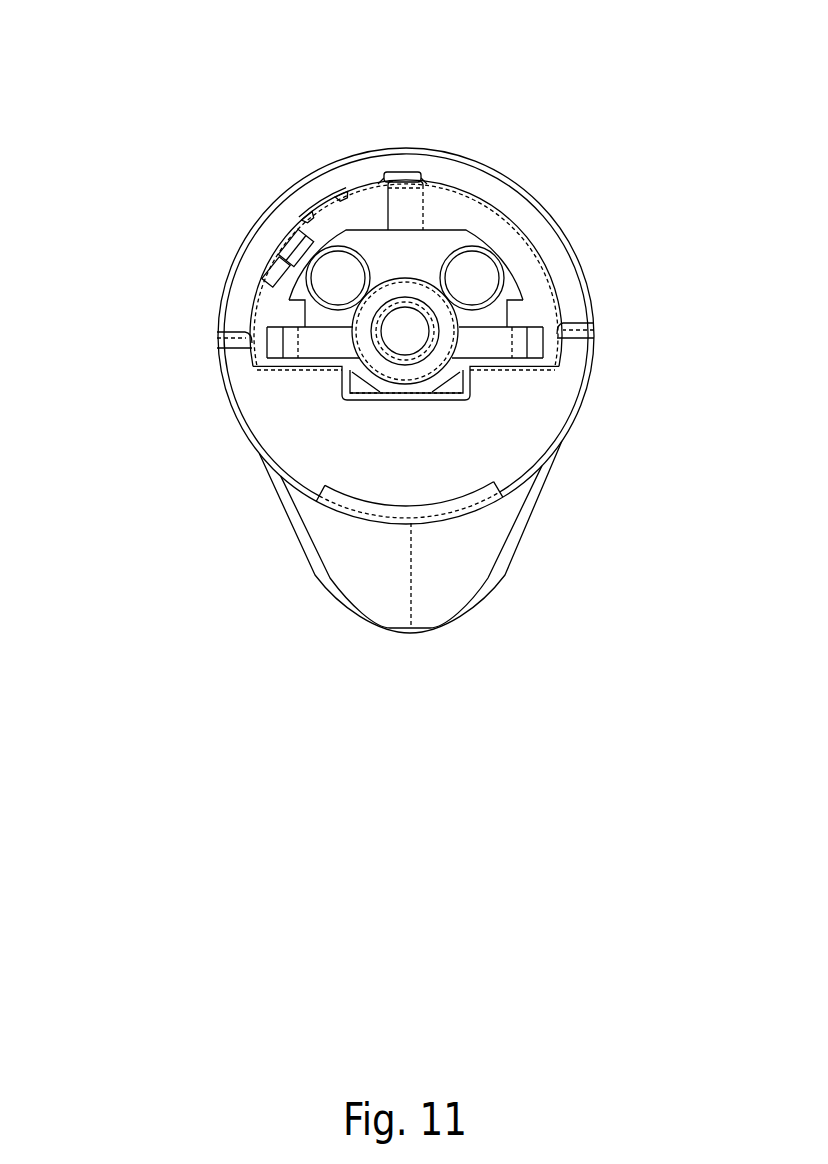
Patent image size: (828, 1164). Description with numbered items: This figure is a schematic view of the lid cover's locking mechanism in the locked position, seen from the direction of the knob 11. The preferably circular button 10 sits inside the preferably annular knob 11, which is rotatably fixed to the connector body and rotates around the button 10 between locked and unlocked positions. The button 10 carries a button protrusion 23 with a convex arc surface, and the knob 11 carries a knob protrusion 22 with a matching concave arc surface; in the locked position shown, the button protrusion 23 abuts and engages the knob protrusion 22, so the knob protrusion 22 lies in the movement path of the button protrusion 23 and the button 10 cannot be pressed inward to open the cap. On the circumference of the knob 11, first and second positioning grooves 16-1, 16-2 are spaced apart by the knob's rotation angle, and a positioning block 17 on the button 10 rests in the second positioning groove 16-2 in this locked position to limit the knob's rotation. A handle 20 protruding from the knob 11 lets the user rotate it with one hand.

The button 10 is at (532, 310).
The knob 11 is at (481, 437).
The first positioning groove 16-1 is at (336, 190).
The second positioning groove 16-2 is at (402, 171).
The positioning block 17 is at (410, 212).
The handle 20 is at (447, 571).
The knob protrusion 22 is at (292, 242).
The button protrusion 23 is at (297, 267).